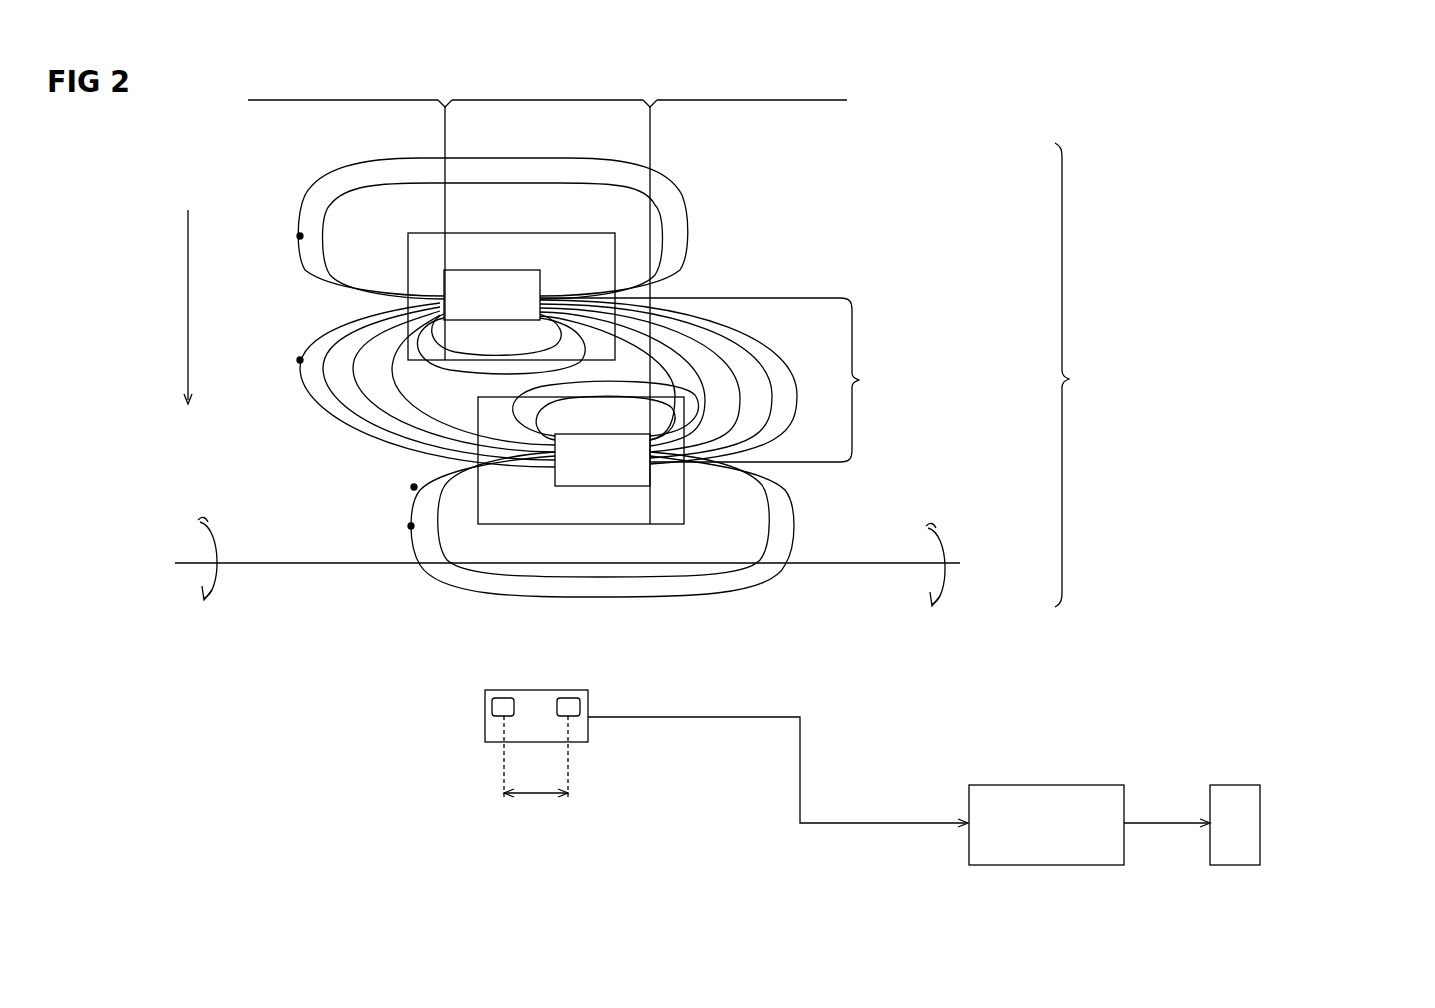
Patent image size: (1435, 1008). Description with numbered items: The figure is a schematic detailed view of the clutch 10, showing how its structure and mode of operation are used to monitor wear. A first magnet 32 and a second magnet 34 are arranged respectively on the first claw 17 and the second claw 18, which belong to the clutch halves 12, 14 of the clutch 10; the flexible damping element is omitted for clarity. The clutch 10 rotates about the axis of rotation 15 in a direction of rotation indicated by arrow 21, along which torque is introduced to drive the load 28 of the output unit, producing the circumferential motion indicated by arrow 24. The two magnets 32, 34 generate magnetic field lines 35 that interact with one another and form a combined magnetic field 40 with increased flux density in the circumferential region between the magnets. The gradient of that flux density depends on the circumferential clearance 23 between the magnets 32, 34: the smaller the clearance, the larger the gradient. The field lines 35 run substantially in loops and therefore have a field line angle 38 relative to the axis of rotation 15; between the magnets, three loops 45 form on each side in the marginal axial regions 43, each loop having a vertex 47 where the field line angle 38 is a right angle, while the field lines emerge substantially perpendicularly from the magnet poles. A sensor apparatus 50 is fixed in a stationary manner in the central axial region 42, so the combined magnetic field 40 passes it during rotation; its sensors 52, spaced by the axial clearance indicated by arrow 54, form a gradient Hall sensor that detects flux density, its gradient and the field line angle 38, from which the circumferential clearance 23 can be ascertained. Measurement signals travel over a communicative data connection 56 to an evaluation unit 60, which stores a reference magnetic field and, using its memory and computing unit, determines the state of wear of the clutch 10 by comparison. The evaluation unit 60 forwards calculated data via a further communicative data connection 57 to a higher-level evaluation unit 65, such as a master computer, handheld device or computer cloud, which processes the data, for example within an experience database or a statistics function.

The clutch 10 is at (93, 152).
The first clutch half 12 is at (366, 640).
The second clutch half 14 is at (822, 644).
The axis of rotation 15 is at (878, 566).
The first claw 17 is at (406, 240).
The second claw 18 is at (680, 513).
The direction of rotation 21 is at (218, 542).
The circumferential clearance 23 is at (714, 380).
The circumferential motion 24 is at (186, 315).
The load 28 is at (946, 547).
The first magnet 32 is at (487, 288).
The second magnet 34 is at (595, 487).
The magnetic field lines 35 is at (594, 158).
The field line angle 38 is at (412, 486).
The combined magnetic field 40 is at (1080, 375).
The central axial region 42 is at (538, 100).
The marginal axial regions 43 is at (336, 100).
The loops 45 is at (328, 180).
The vertex 47 is at (298, 236).
The sensor apparatus 50 is at (539, 690).
The sensors 52 is at (505, 694).
The axial clearance 54 is at (536, 797).
The communicative data connection 56 is at (892, 821).
The communicative data connection 57 is at (1165, 821).
The evaluation unit 60 is at (1040, 785).
The higher-level evaluation unit 65 is at (1239, 785).